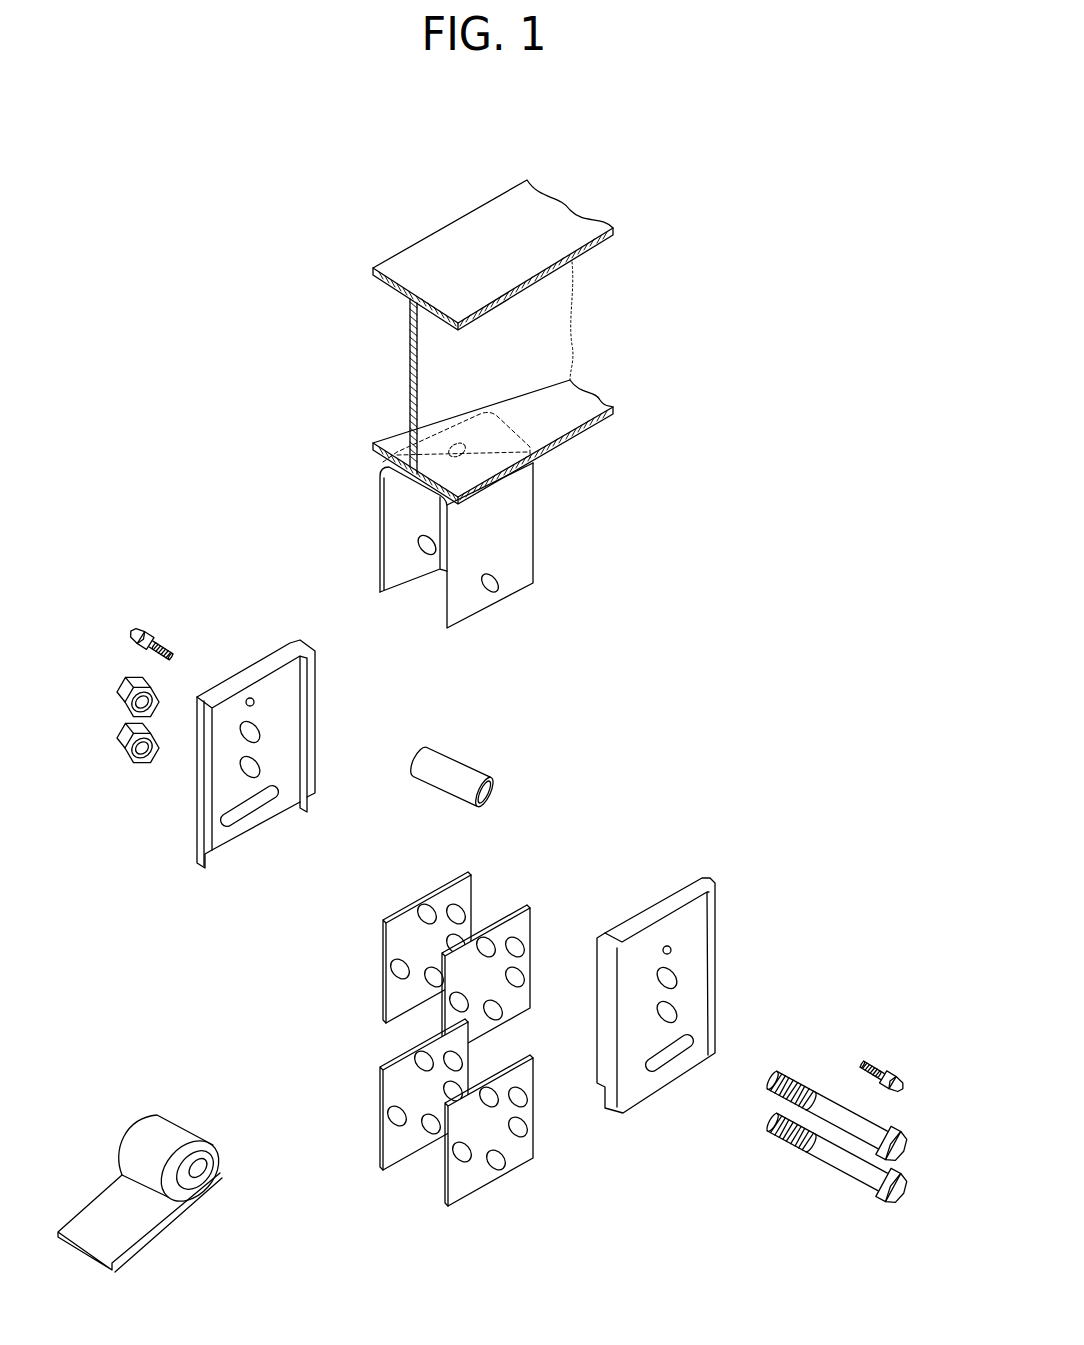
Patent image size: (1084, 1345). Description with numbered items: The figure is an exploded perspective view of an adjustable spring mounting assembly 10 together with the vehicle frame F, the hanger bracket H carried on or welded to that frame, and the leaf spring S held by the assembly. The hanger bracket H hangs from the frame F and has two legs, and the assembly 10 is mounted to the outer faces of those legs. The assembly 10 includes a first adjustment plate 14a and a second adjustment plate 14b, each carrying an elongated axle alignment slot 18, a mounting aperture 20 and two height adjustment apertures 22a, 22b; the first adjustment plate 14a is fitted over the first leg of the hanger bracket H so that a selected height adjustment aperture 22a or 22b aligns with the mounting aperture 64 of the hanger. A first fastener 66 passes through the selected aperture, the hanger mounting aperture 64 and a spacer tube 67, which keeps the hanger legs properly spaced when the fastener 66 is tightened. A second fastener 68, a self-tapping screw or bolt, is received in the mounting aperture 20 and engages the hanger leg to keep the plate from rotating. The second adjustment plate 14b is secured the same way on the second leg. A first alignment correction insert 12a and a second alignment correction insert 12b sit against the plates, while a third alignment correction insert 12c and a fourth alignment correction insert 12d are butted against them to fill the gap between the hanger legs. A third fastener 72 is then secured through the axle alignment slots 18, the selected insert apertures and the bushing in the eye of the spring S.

The vehicle frame F is at (448, 235).
The hanger bracket H is at (397, 508).
The mounting aperture 64 is at (495, 587).
The second fastener 68 is at (163, 643).
The first fastener 66 is at (120, 687).
The third fastener 72 is at (120, 753).
The second adjustment plate 14b is at (257, 663).
The adjustable spring mounting assembly 10 is at (755, 708).
The spacer tube 67 is at (472, 767).
The first alignment correction insert 12a is at (528, 932).
The second alignment correction insert 12b is at (388, 948).
The third alignment correction insert 12c is at (488, 1183).
The fourth alignment correction insert 12d is at (385, 1098).
The first adjustment plate 14a is at (715, 933).
The mounting aperture 20 is at (668, 945).
The height adjustment aperture 22a is at (677, 978).
The height adjustment aperture 22b is at (677, 1013).
The elongated axle alignment slot 18 is at (663, 1067).
The leaf spring S is at (162, 1225).